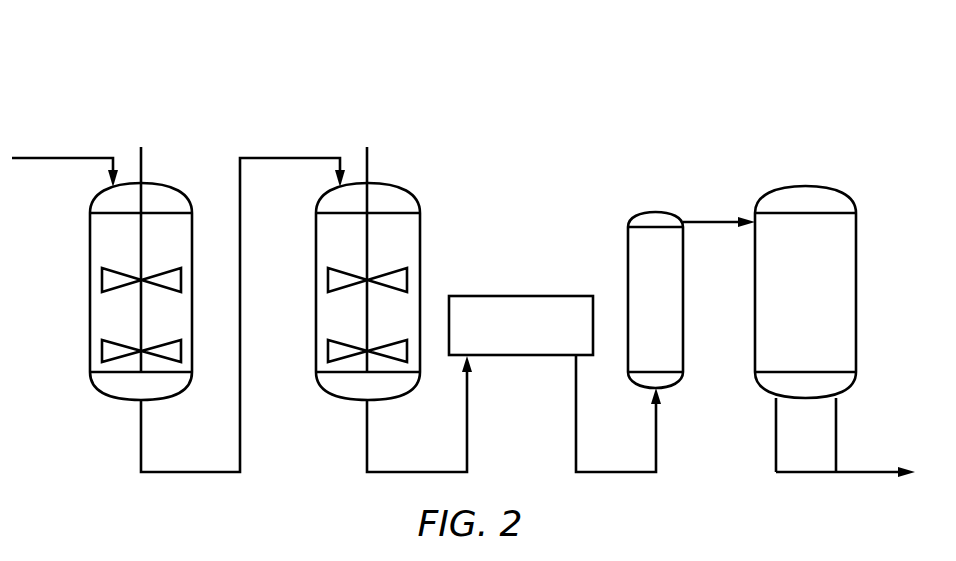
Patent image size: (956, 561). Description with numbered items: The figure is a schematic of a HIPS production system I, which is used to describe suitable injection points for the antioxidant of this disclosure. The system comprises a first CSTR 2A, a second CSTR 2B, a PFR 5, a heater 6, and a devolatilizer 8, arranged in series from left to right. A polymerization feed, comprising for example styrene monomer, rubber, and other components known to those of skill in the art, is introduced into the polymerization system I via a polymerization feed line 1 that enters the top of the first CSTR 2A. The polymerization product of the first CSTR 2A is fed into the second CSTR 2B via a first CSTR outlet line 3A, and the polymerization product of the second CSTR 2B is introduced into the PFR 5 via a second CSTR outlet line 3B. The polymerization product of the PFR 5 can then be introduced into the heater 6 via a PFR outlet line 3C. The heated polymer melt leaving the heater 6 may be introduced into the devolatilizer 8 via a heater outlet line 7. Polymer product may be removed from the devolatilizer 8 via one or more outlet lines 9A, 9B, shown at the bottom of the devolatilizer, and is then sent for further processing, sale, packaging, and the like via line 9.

The HIPS production system I is at (664, 40).
The polymerization feed line 1 is at (66, 156).
The first CSTR 2A is at (182, 255).
The second CSTR 2B is at (408, 256).
The first CSTR outlet line 3A is at (190, 470).
The second CSTR outlet line 3B is at (420, 470).
The PFR outlet line 3C is at (617, 470).
The PFR 5 is at (513, 336).
The heater 6 is at (649, 311).
The heater outlet line 7 is at (717, 218).
The devolatilizer 8 is at (798, 304).
The outlet line 9A is at (776, 432).
The outlet line 9B is at (836, 440).
The line 9 is at (882, 473).